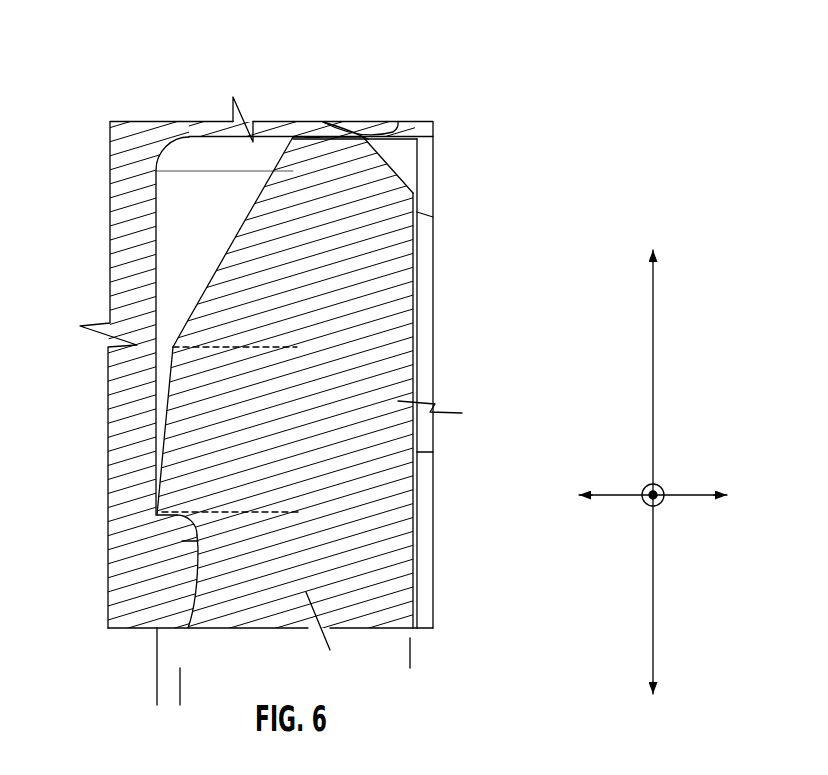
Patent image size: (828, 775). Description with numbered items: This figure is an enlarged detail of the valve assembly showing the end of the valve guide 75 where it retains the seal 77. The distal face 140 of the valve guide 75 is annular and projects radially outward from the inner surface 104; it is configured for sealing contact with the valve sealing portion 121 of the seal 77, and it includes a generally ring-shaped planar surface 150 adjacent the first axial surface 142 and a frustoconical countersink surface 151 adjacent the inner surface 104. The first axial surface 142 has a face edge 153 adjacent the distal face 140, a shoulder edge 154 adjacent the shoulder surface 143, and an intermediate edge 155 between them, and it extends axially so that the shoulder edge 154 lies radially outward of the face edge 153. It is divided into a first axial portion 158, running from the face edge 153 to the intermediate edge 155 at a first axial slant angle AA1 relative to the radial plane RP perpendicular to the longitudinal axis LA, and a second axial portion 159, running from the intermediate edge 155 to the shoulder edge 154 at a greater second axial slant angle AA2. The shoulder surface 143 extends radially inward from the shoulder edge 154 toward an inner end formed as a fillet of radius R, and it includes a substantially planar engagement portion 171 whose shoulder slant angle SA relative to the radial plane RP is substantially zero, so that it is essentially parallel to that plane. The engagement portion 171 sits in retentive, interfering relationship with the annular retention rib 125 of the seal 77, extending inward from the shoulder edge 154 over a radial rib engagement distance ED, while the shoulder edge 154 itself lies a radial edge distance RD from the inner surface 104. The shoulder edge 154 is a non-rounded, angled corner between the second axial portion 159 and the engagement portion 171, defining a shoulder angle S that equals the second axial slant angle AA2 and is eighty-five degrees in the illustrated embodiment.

The valve guide 75 is at (364, 487).
The seal 77 is at (123, 202).
The inner surface 104 is at (419, 250).
The valve sealing portion 121 is at (366, 128).
The annular retention rib 125 is at (192, 540).
The distal face 140 is at (317, 134).
The first axial surface 142 is at (185, 321).
The shoulder surface 143 is at (172, 519).
The planar surface 150 is at (300, 134).
The countersink surface 151 is at (384, 161).
The face edge 153 is at (294, 135).
The shoulder edge 154 is at (158, 514).
The intermediate edge 155 is at (173, 347).
The first axial portion 158 is at (253, 207).
The second axial portion 159 is at (165, 400).
The engagement portion 171 is at (158, 522).
The radius R is at (189, 524).
The first axial slant angle AA1 is at (226, 264).
The second axial slant angle AA2 is at (239, 510).
The shoulder angle S is at (259, 510).
The shoulder slant angle SA is at (262, 519).
The radial edge distance RD is at (409, 658).
The radial rib engagement distance ED is at (215, 692).
The longitudinal axis LA is at (652, 337).
The radial plane RP is at (619, 494).